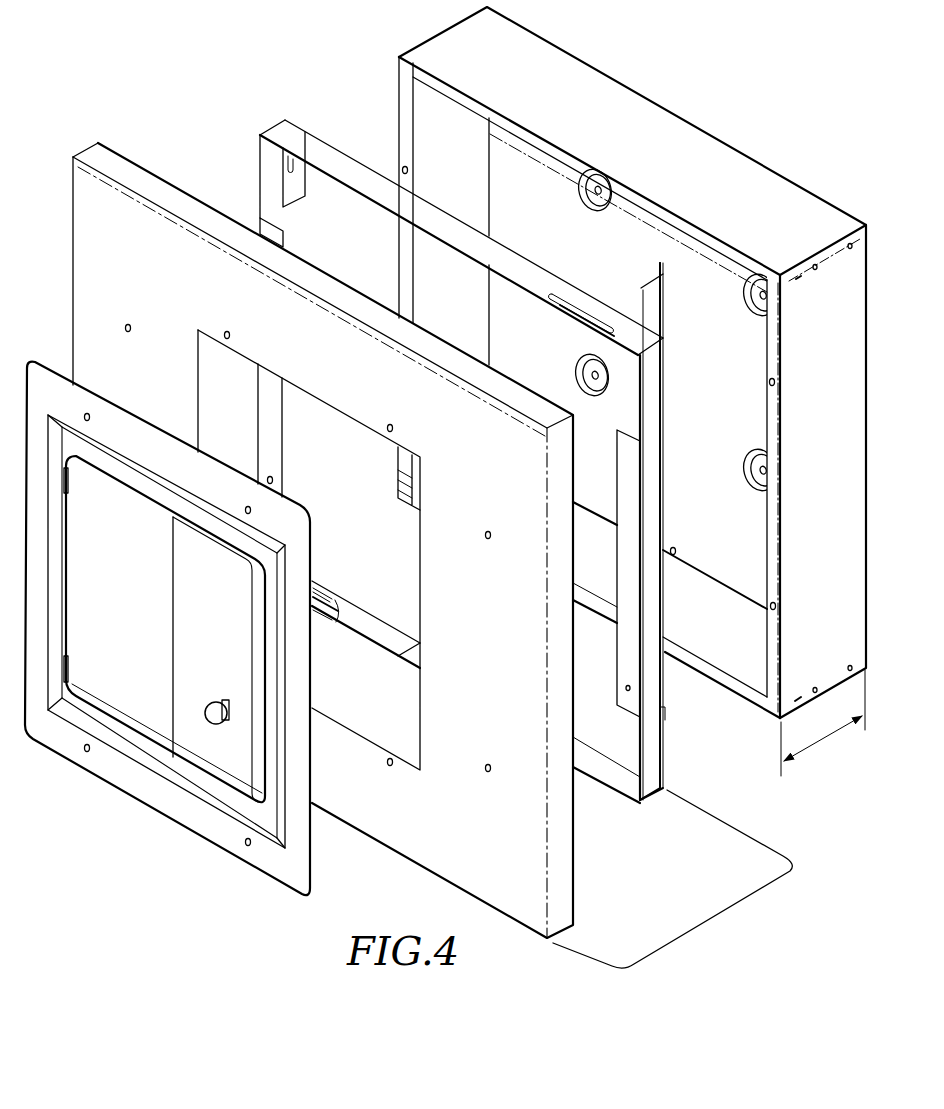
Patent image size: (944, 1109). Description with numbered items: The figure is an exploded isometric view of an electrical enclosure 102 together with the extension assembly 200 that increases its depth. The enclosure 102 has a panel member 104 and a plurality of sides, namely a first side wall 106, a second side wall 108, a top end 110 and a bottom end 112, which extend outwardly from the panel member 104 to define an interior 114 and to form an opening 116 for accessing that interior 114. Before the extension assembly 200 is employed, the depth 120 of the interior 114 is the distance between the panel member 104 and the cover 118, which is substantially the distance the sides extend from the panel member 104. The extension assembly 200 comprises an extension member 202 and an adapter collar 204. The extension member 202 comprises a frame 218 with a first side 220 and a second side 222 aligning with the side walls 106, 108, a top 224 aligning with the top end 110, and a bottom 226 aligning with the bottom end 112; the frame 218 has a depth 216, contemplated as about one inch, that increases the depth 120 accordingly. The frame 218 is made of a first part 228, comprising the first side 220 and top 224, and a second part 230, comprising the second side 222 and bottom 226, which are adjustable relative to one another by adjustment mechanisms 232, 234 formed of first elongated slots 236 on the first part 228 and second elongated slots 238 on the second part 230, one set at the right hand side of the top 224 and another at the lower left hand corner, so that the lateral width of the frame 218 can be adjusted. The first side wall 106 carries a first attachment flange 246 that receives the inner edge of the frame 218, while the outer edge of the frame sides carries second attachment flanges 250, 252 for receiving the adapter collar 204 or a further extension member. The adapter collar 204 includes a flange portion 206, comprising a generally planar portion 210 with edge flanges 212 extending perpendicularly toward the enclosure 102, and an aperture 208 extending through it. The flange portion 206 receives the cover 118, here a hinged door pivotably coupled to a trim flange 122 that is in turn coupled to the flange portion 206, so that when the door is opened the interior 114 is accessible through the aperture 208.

The electrical enclosure 102 is at (658, 399).
The panel member 104 is at (692, 352).
The first side wall 106 is at (437, 152).
The second side wall 108 is at (814, 332).
The top end 110 is at (632, 149).
The bottom end 112 is at (692, 620).
The interior 114 is at (748, 355).
The opening 116 is at (760, 522).
The cover 118 is at (91, 562).
The depth 120 is at (828, 738).
The trim flange 122 is at (167, 629).
The extension assembly 200 is at (708, 922).
The extension member 202 is at (421, 354).
The adapter collar 204 is at (328, 519).
The flange portion 206 is at (605, 586).
The aperture 208 is at (412, 530).
The generally planar portion 210 is at (464, 637).
The edge flanges 212 is at (80, 153).
The depth 216 is at (670, 288).
The frame 218 is at (670, 665).
The first side 220 is at (277, 212).
The second side 222 is at (658, 708).
The top 224 is at (461, 198).
The bottom 226 is at (597, 768).
The first part 228 is at (300, 128).
The second part 230 is at (696, 531).
The adjustment mechanism 232 is at (608, 292).
The adjustment mechanism 234 is at (366, 597).
The first elongated slots 236 is at (600, 334).
The second elongated slots 238 is at (570, 290).
The first attachment flange 246 is at (405, 282).
The second attachment flange 250 is at (277, 403).
The second attachment flange 252 is at (623, 442).